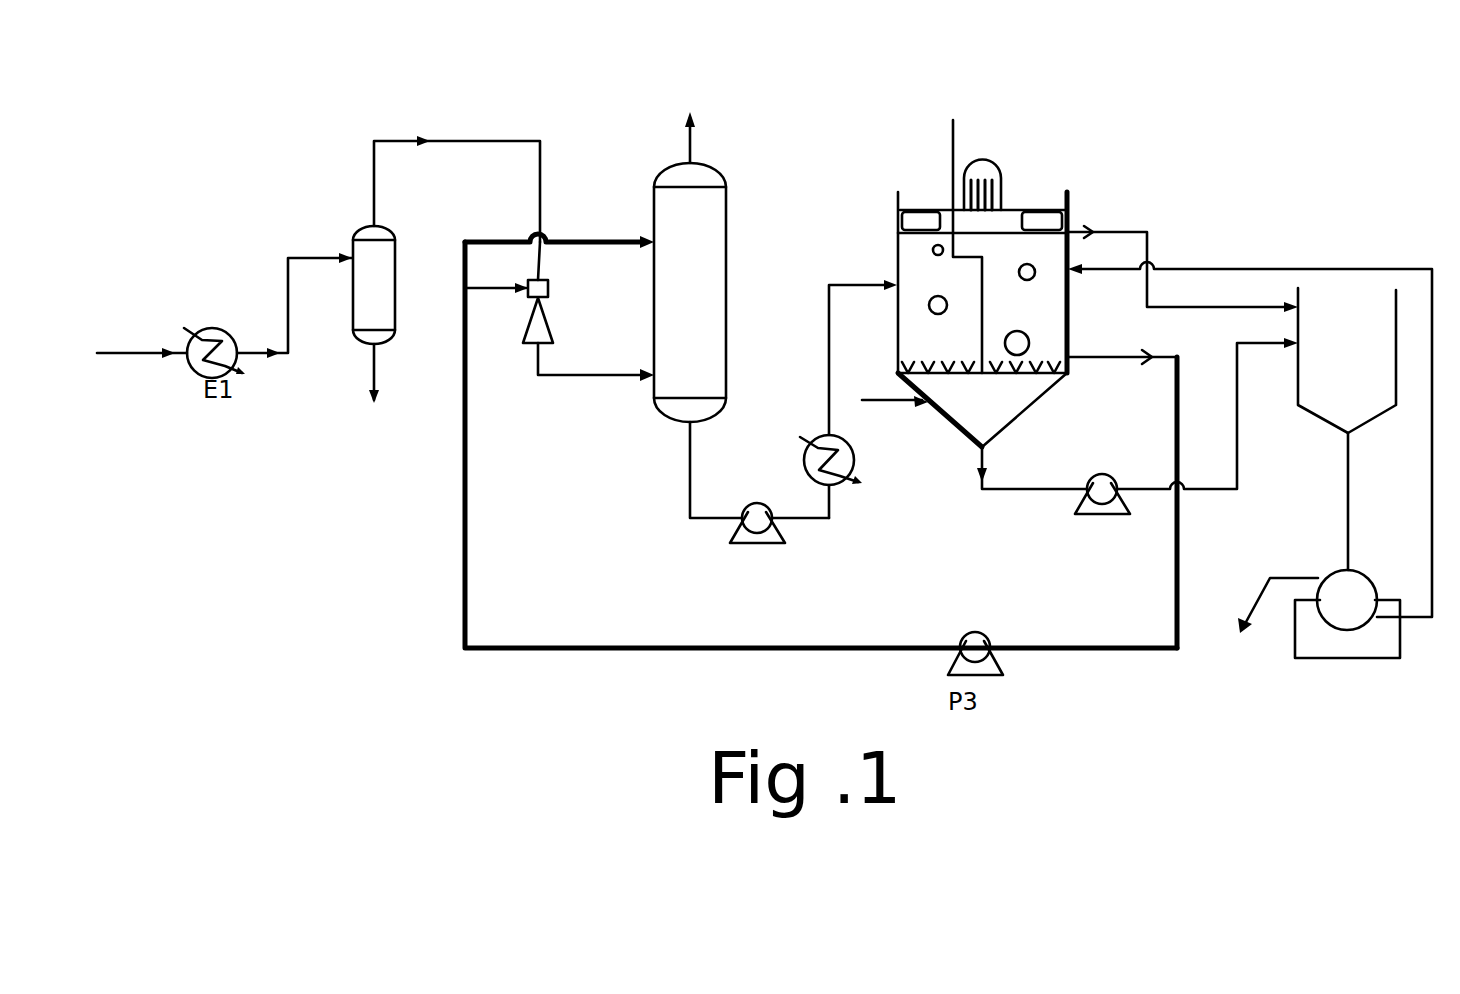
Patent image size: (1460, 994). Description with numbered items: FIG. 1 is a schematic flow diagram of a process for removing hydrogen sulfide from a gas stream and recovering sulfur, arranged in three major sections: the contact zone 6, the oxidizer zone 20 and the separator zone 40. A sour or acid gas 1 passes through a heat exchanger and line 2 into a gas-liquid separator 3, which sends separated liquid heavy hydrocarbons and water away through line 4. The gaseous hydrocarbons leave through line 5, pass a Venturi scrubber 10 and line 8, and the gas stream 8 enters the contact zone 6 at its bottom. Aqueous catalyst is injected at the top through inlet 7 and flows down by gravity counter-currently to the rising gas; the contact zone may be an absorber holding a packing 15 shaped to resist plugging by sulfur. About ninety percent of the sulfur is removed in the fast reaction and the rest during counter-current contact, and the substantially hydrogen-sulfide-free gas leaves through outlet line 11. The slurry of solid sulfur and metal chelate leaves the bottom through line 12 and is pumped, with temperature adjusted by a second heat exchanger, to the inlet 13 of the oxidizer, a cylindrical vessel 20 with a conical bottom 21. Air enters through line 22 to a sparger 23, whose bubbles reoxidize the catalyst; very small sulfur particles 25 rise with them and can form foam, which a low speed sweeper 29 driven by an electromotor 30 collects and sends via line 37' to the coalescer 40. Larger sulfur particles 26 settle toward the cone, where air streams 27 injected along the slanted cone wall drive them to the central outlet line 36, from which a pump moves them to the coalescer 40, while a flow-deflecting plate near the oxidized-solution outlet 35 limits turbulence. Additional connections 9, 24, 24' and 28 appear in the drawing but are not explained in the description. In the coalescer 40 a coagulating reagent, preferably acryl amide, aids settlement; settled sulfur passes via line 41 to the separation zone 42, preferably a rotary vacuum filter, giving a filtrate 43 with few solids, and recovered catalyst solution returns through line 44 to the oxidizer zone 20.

The sour or acid gas 1 is at (122, 355).
The line 2 is at (294, 257).
The gas-liquid separator 3 is at (362, 300).
The line 4 is at (372, 370).
The line 5 is at (373, 175).
The contact zone 6 is at (729, 228).
The inlet 7 is at (572, 240).
The line 8 is at (578, 373).
The control line to valve 9 is at (487, 292).
The Venturi scrubber 10 is at (542, 322).
The outlet line 11 is at (692, 148).
The line 12 is at (692, 470).
The inlet 13 is at (844, 270).
The packing 15 is at (727, 328).
The oxidizer zone 20 is at (898, 235).
The conical bottom 21 is at (1025, 410).
The line 22 is at (960, 125).
The sparger 23 is at (1062, 370).
The regenerated solution outlet line 24 is at (1119, 340).
The overflow line to settler 24' is at (1074, 269).
The small sulfur particles 25 is at (932, 251).
The larger sulfur particles 26 is at (1030, 343).
The air streams 27 is at (877, 404).
The air sparger 28 is at (936, 404).
The low speed sweeper 29 is at (1070, 210).
The electromotor 30 is at (1001, 180).
The outlet 35 is at (1177, 425).
The outlet line 36 is at (1237, 432).
The line 37' is at (1181, 212).
The coalescer 40 is at (1380, 416).
The line 41 is at (1350, 521).
The separation zone 42 is at (1360, 585).
The filtrate 43 is at (1260, 600).
The line 44 is at (1320, 269).